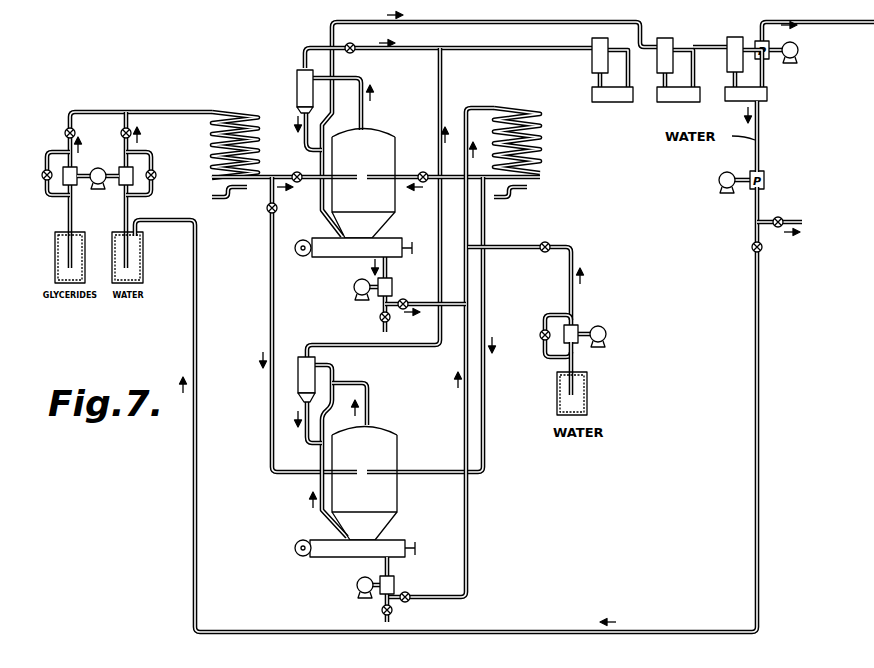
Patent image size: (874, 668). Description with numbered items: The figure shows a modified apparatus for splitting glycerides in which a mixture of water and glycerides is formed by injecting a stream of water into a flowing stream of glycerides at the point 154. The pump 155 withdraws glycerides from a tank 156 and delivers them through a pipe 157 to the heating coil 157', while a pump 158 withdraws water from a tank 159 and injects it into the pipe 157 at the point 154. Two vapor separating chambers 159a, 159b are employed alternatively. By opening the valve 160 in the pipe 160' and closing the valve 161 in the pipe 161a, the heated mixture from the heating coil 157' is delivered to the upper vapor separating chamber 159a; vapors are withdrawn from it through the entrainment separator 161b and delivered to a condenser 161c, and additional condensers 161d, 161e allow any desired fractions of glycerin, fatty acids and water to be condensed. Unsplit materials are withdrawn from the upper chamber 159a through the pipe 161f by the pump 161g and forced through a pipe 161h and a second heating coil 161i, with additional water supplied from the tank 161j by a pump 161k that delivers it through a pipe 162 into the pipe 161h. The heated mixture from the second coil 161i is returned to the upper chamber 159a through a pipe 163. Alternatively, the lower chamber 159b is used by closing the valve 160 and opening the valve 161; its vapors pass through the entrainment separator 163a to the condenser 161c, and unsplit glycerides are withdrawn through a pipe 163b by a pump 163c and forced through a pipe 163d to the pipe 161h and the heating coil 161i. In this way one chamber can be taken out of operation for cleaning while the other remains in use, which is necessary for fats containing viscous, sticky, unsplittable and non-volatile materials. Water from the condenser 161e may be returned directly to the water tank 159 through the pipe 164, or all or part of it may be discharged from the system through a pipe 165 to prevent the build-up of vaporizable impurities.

The point of water injection 154 is at (127, 112).
The pump 155 is at (74, 190).
The tank 156 is at (55, 258).
The pipe 157 is at (127, 177).
The heating coil 157' is at (236, 140).
The pump 158 is at (134, 177).
The tank 159 is at (143, 257).
The upper vapor separating chamber 159a is at (381, 128).
The lower vapor separating chamber 159b is at (395, 447).
The valve 160 is at (283, 163).
The pipe 160' is at (284, 201).
The valve 161 is at (268, 213).
The pipe 161a is at (272, 325).
The entrainment separator 161b is at (297, 83).
The condenser 161c is at (592, 42).
The condenser 161d is at (680, 33).
The condenser 161e is at (748, 33).
The pipe 161f is at (390, 265).
The pump 161g is at (378, 298).
The pipe 161h is at (467, 287).
The second heating coil 161i is at (523, 110).
The tank 161j is at (588, 388).
The pump 161k is at (578, 330).
The pipe 162 is at (513, 247).
The pipe 163 is at (430, 170).
The entrainment separator 163a is at (298, 363).
The pipe 163b is at (390, 567).
The pump 163c is at (395, 583).
The pipe 163d is at (472, 527).
The pipe 164 is at (757, 386).
The pipe 165 is at (795, 208).